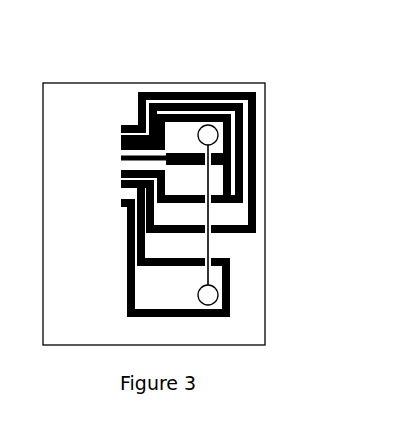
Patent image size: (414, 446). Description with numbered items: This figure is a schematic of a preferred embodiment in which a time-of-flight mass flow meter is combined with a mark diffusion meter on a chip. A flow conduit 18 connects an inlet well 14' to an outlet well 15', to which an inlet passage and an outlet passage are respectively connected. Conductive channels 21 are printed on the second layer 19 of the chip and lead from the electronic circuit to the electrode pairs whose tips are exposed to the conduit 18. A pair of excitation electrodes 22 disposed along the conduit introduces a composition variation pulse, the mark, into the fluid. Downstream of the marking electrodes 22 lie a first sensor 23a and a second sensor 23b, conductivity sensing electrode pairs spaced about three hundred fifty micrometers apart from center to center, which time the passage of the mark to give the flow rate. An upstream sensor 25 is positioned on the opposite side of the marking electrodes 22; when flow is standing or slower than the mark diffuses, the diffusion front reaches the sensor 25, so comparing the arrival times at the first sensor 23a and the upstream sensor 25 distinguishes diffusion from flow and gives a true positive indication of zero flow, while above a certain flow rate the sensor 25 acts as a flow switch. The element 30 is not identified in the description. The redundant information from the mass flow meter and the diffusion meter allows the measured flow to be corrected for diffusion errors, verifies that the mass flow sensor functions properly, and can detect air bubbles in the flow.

The inlet well 14' is at (262, 339).
The outlet well 15' is at (236, 86).
The flow conduit 18 is at (208, 242).
The second layer 19 is at (44, 312).
The conductive channels 21 is at (120, 129).
The excitation electrodes 22 is at (187, 225).
The first sensor 23a is at (195, 190).
The second downstream sensor 23b is at (193, 155).
The upstream sensor 25 is at (227, 273).
The antenna circuit 30 is at (165, 211).